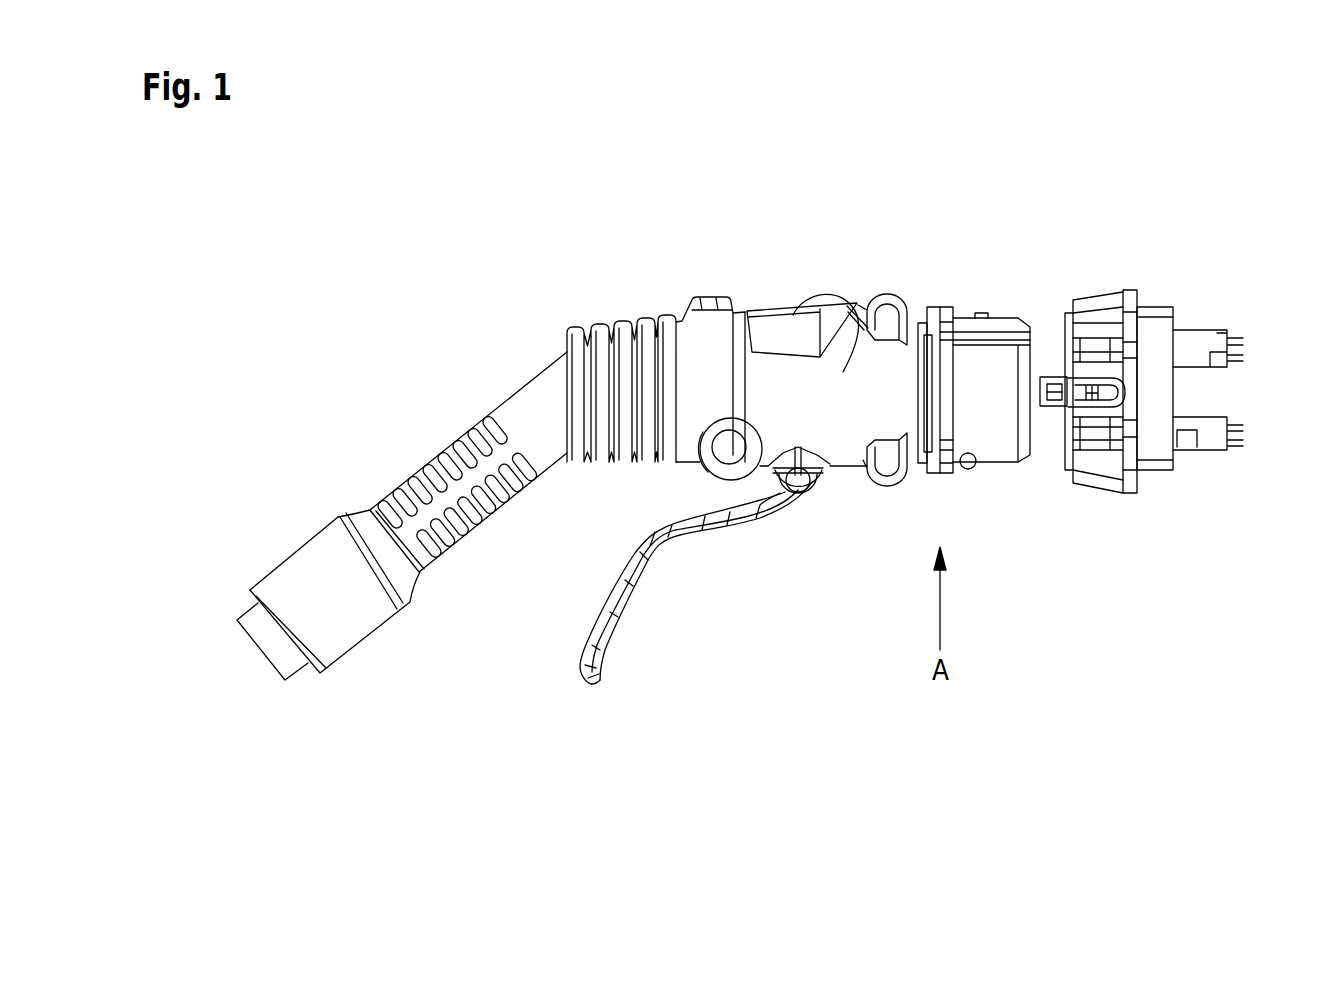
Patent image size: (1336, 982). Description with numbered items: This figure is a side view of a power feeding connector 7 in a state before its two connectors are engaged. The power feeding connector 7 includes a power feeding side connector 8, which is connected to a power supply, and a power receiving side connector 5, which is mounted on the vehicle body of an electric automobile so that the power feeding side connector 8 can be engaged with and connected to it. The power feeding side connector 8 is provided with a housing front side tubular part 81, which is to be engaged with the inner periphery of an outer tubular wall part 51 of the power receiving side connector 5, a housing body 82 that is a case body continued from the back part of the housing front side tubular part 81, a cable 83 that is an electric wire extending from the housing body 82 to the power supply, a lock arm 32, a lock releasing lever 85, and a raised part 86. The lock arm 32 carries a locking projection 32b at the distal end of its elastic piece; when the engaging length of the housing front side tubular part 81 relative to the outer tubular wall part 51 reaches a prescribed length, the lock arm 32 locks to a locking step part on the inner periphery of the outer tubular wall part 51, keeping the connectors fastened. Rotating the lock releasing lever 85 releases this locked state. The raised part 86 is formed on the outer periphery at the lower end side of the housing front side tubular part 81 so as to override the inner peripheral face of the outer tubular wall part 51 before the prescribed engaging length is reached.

The power receiving side connector 5 is at (1141, 376).
The power feeding connector 7 is at (1127, 191).
The power feeding side connector 8 is at (1010, 315).
The lock arm 32 is at (968, 318).
The locking projection 32b is at (985, 315).
The outer tubular wall part 51 is at (1094, 464).
The housing front side tubular part 81 is at (997, 453).
The housing body 82 is at (838, 307).
The cable 83 is at (517, 415).
The lock releasing lever 85 is at (613, 630).
The raised part 86 is at (961, 464).